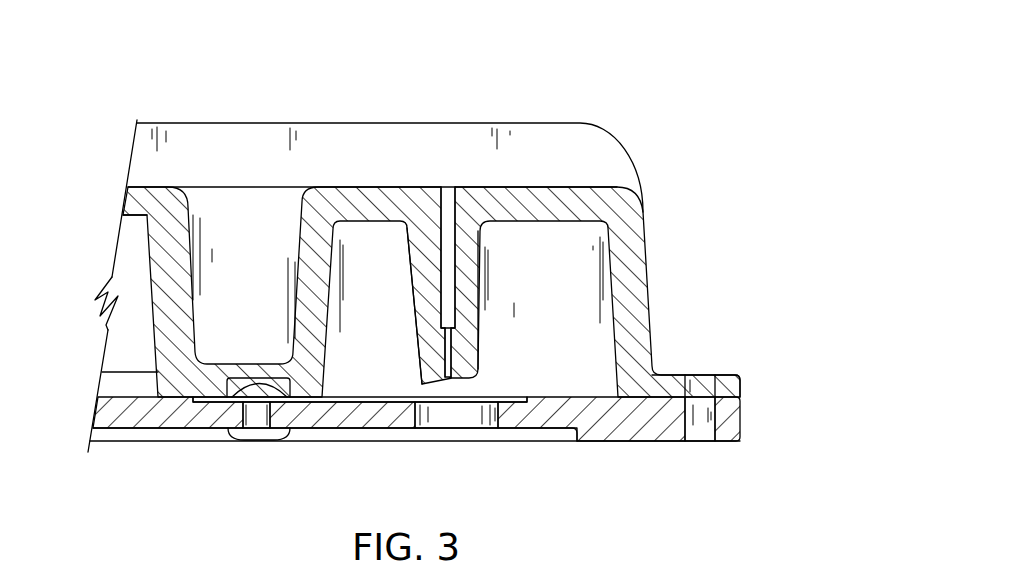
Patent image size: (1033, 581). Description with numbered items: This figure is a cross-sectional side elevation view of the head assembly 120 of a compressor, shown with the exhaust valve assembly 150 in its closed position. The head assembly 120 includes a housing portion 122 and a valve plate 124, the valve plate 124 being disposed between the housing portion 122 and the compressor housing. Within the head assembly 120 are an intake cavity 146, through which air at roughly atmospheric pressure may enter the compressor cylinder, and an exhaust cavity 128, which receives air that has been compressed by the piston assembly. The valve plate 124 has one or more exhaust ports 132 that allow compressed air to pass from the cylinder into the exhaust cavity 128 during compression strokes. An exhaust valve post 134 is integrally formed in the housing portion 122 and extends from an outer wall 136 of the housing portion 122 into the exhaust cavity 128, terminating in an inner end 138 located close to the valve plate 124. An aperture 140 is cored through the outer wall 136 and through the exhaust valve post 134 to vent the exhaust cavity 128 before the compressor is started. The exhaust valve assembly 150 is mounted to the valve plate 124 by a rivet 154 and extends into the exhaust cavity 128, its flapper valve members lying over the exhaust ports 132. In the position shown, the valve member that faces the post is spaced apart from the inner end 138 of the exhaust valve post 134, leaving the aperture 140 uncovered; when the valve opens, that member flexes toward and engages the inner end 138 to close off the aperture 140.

The head assembly 120 is at (628, 103).
The housing portion 122 is at (741, 390).
The valve plate 124 is at (741, 418).
The exhaust cavity 128 is at (585, 293).
The exhaust port 132 is at (463, 420).
The exhaust valve post 134 is at (472, 277).
The outer wall 136 is at (520, 193).
The inner end 138 is at (452, 378).
The aperture 140 is at (448, 205).
The intake cavity 146 is at (128, 250).
The exhaust valve assembly 150 is at (527, 397).
The rivet 154 is at (296, 422).